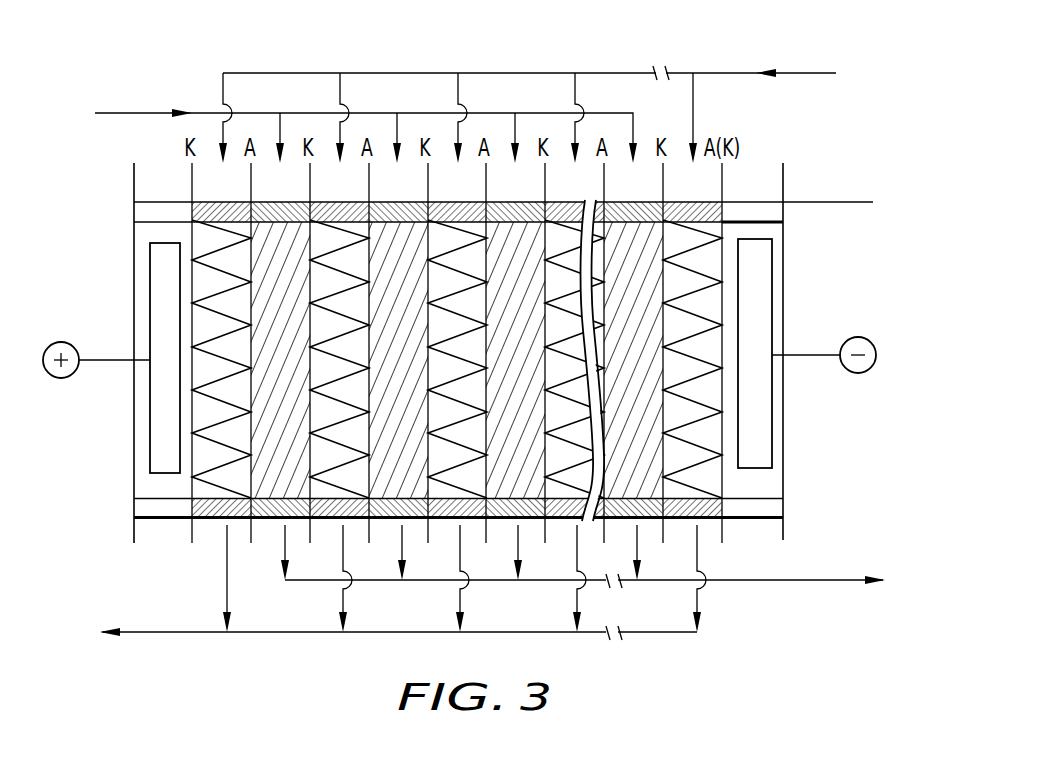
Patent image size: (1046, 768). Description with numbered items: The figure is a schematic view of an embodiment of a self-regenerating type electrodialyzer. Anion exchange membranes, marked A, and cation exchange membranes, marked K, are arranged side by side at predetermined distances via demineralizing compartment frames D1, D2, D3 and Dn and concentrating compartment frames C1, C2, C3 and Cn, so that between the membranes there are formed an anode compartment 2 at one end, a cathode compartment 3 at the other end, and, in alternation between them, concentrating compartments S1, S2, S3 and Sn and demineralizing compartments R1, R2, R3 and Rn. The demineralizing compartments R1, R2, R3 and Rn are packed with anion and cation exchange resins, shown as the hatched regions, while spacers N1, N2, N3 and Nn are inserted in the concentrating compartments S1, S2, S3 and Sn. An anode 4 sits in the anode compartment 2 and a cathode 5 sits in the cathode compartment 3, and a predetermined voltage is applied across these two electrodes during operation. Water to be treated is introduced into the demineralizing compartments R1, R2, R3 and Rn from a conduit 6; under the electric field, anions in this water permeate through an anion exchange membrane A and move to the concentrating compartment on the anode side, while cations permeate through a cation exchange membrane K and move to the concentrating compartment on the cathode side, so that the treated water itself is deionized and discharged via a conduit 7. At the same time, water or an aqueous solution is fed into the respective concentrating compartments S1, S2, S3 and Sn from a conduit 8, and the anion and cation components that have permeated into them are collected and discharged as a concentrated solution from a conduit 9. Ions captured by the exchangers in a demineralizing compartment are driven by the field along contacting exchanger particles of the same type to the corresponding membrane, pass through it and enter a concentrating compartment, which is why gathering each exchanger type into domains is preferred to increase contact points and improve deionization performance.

The anode compartment 2 is at (140, 440).
The cathode compartment 3 is at (780, 443).
The anode 4 is at (158, 259).
The cathode 5 is at (765, 257).
The conduit 6 is at (137, 112).
The conduit 7 is at (797, 582).
The conduit 8 is at (797, 72).
The conduit 9 is at (187, 634).
The concentrating compartment S1 is at (193, 350).
The concentrating compartment S2 is at (311, 350).
The concentrating compartment S3 is at (429, 350).
The concentrating compartment Sn is at (722, 362).
The demineralizing compartment R1 is at (310, 362).
The demineralizing compartment R2 is at (428, 362).
The demineralizing compartment R3 is at (545, 362).
The demineralizing compartment Rn is at (605, 350).
The spacer N1 is at (232, 230).
The spacer N2 is at (325, 231).
The spacer N3 is at (443, 231).
The spacer Nn is at (671, 231).
The concentrating compartment frame C1 is at (218, 520).
The concentrating compartment frame C2 is at (337, 520).
The concentrating compartment frame C3 is at (456, 520).
The concentrating compartment frame Cn is at (691, 520).
The demineralizing compartment frame D1 is at (279, 520).
The demineralizing compartment frame D2 is at (398, 520).
The demineralizing compartment frame D3 is at (515, 520).
The demineralizing compartment frame Dn is at (631, 520).